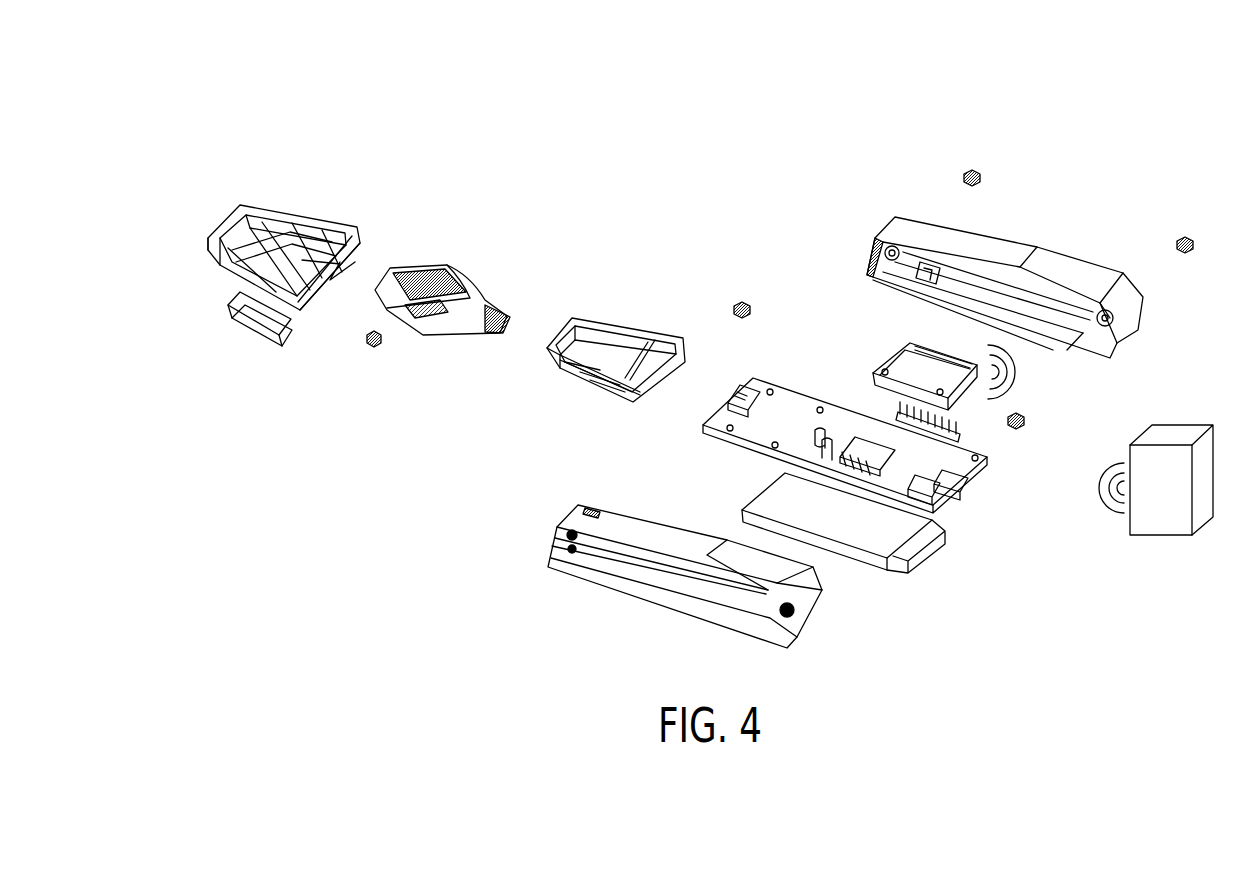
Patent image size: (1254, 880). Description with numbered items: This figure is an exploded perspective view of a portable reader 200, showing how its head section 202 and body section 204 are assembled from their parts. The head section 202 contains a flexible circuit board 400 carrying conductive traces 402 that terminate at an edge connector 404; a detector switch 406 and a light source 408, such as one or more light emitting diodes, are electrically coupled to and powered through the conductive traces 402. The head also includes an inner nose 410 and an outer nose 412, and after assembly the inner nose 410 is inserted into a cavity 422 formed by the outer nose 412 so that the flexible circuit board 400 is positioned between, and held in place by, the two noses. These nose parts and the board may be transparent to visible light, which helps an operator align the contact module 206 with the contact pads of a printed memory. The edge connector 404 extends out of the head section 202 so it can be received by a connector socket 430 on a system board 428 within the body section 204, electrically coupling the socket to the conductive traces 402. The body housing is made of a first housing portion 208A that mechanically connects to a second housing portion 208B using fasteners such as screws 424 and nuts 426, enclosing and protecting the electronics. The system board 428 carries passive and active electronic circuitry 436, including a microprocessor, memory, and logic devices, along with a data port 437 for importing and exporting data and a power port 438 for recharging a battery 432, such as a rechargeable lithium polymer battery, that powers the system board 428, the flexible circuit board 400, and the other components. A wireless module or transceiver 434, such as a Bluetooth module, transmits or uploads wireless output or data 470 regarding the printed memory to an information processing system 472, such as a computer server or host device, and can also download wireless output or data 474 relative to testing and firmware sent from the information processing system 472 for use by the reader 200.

The reader 200 is at (422, 128).
The head section 202 is at (712, 290).
The body section 204 is at (1220, 230).
The contact module 206 is at (228, 322).
The first housing portion 208A is at (1120, 330).
The second housing portion 208B is at (614, 580).
The flexible circuit board 400 is at (476, 300).
The conductive traces 402 is at (440, 272).
The edge connector 404 is at (528, 294).
The detector switch 406 is at (372, 349).
The light source 408 is at (391, 346).
The inner nose 410 is at (610, 338).
The outer nose 412 is at (280, 216).
The cavity 422 is at (375, 238).
The screws 424 is at (963, 177).
The nuts 426 is at (740, 300).
The system board 428 is at (712, 420).
The connector socket 430 is at (738, 386).
The battery 432 is at (878, 560).
The wireless module or transceiver 434 is at (886, 346).
The passive and active electronic circuitry 436 is at (806, 358).
The data port 437 is at (968, 480).
The power port 438 is at (945, 498).
The wireless output or data 470 is at (1020, 385).
The information processing system 472 is at (1150, 525).
The wireless output or data 474 is at (1106, 512).